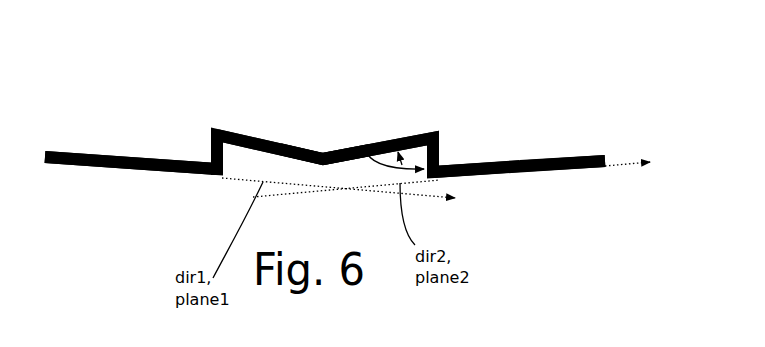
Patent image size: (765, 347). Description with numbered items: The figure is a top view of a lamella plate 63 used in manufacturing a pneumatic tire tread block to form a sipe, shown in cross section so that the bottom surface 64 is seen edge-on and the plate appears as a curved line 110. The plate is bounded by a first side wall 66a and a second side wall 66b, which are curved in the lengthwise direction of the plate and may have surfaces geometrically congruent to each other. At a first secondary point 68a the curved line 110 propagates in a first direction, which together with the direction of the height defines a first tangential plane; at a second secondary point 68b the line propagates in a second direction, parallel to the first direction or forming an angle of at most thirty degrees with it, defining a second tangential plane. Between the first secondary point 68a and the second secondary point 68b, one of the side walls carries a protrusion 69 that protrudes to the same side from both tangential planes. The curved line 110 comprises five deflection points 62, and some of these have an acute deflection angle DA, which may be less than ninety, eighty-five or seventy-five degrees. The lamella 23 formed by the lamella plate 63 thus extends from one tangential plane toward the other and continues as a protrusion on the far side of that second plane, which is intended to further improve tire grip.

The lamella 23 is at (129, 54).
The deflection point 62 is at (438, 133).
The lamella plate 63 is at (623, 155).
The bottom surface 64 is at (555, 160).
The first side wall 66a is at (193, 178).
The second side wall 66b is at (212, 150).
The first secondary point 68a is at (80, 152).
The second secondary point 68b is at (487, 175).
The protrusion 69 is at (277, 165).
The curved line 110 is at (245, 137).
The acute deflection angle DA is at (365, 148).